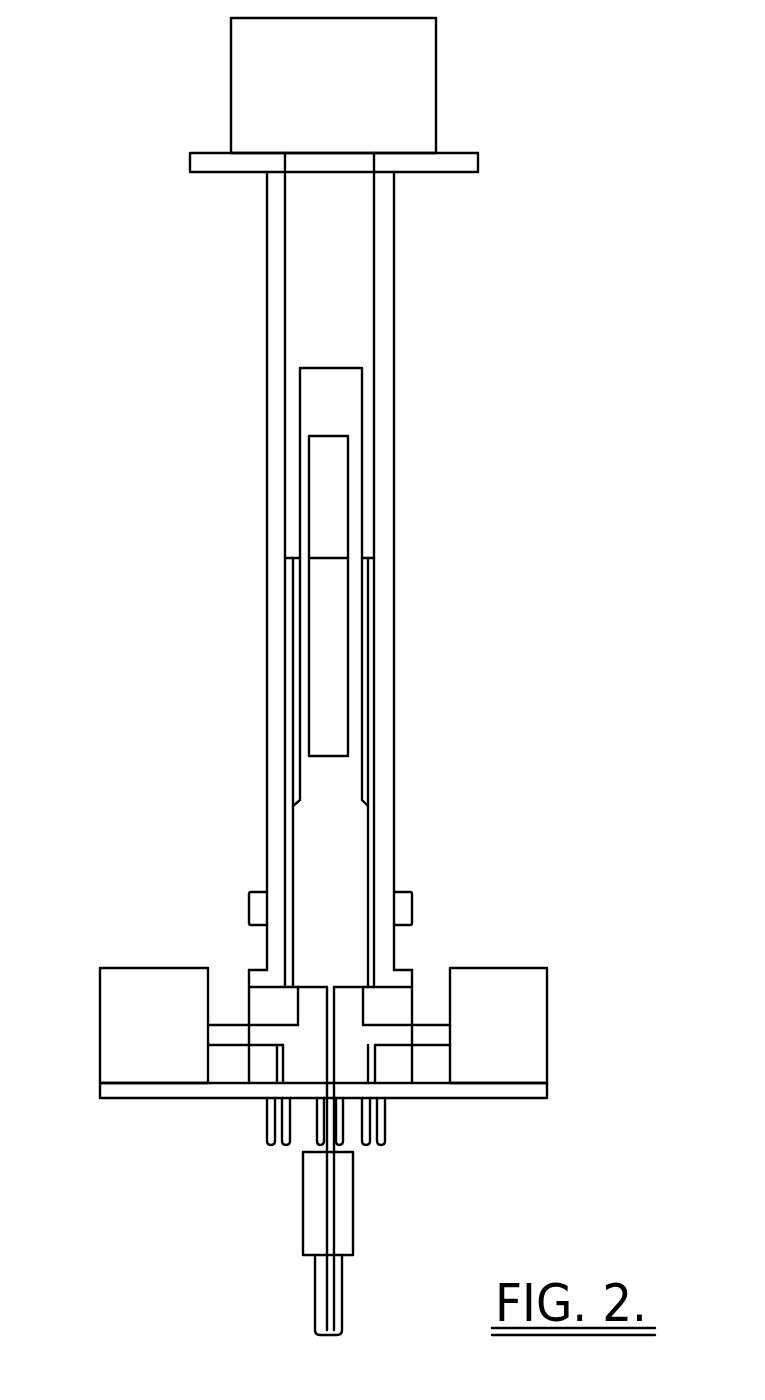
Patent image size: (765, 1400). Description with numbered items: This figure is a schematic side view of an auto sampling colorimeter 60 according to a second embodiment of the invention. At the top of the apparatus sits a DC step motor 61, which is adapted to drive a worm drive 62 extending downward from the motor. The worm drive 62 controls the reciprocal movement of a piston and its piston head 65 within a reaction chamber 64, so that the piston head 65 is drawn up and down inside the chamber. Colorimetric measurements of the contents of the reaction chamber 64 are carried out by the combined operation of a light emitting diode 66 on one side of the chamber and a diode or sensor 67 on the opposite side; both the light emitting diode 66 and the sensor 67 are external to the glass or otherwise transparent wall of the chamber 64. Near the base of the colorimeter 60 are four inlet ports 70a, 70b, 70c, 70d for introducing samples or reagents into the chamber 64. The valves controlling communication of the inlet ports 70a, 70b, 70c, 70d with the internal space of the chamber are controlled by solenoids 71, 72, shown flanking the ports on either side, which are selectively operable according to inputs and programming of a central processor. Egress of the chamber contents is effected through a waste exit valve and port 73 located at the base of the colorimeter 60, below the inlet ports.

The auto sampling colorimeter 60 is at (178, 298).
The DC step motor 61 is at (410, 63).
The worm drive 62 is at (367, 238).
The reaction chamber 64 is at (395, 395).
The piston head 65 is at (352, 773).
The light emitting diode 66 is at (247, 910).
The diode or sensor 67 is at (412, 898).
The inlet port 70a is at (270, 1147).
The inlet port 70b is at (281, 1147).
The inlet port 70c is at (372, 1147).
The inlet port 70d is at (382, 1148).
The solenoid 71 is at (105, 1047).
The solenoid 72 is at (533, 1045).
The waste exit valve and port 73 is at (312, 1222).